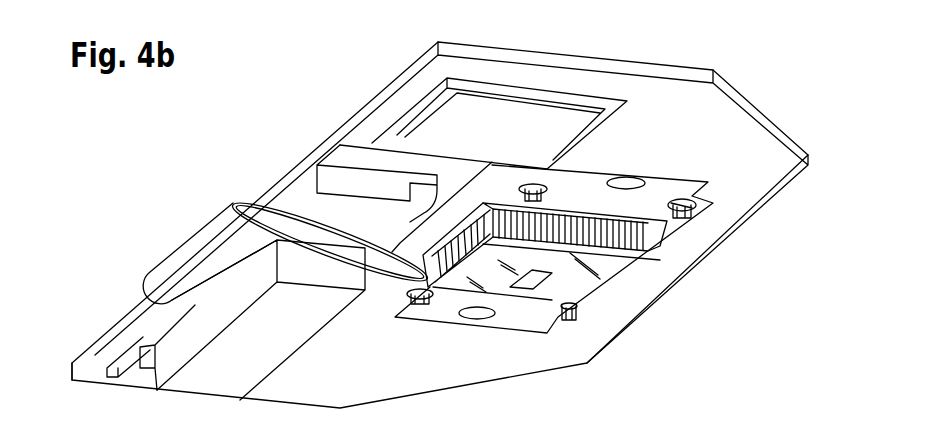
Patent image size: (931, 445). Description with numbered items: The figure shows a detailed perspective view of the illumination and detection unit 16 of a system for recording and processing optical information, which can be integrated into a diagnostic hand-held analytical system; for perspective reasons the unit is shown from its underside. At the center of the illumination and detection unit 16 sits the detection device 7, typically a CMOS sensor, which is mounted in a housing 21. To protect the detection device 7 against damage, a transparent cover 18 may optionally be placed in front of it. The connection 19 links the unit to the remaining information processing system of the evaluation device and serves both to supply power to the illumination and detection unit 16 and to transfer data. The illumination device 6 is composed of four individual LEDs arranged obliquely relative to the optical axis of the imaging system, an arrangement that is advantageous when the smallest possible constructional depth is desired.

The illumination device 6 is at (530, 184).
The detection device 7 is at (522, 292).
The illumination and detection unit 16 is at (266, 157).
The transparent cover 18 is at (593, 288).
The connection 19 is at (187, 337).
The housing 21 is at (615, 240).